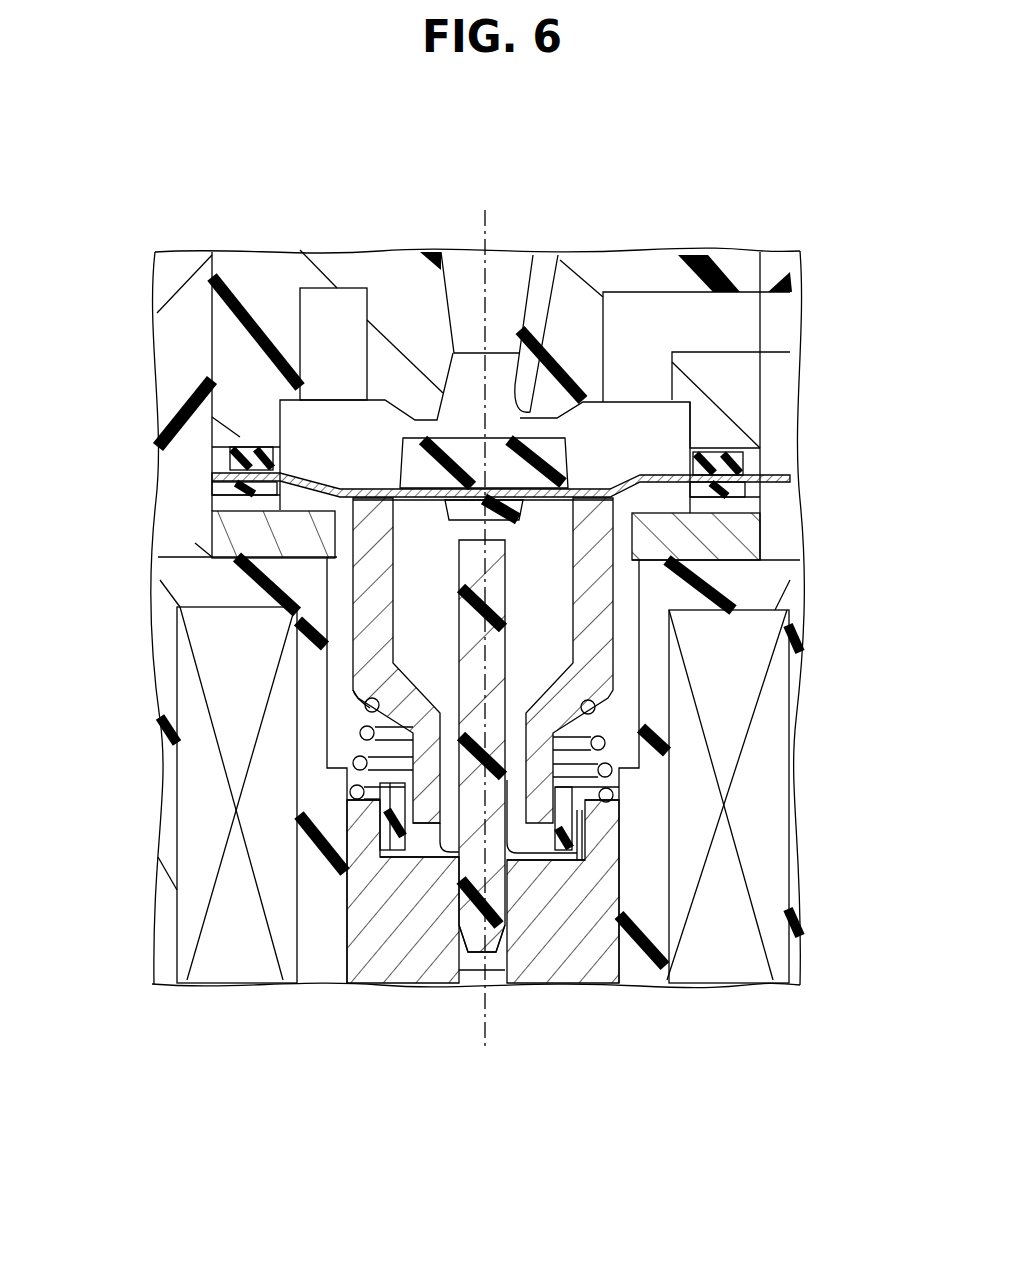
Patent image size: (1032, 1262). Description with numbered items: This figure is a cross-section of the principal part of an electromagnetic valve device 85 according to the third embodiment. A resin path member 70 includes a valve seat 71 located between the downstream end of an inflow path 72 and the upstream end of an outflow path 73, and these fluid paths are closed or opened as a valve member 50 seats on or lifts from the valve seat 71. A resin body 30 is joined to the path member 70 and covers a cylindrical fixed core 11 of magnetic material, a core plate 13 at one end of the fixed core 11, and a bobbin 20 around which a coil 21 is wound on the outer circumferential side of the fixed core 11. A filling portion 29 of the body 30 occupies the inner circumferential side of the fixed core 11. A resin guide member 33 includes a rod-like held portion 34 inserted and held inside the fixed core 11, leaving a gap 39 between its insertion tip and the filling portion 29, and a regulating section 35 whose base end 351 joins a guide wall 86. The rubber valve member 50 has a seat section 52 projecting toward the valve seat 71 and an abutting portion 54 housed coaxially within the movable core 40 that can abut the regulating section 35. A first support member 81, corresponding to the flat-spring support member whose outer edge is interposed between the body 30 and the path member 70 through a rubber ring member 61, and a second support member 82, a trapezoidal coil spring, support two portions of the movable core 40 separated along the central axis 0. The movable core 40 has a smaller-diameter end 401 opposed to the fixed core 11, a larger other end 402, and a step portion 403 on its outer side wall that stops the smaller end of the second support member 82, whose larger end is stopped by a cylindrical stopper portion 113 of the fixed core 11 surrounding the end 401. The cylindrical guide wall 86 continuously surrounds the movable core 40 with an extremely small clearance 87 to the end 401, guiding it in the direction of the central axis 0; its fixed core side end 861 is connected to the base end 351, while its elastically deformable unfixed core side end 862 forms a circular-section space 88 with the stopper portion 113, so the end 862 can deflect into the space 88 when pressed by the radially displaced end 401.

The central axis 0 is at (486, 230).
The fixed core 11 is at (353, 895).
The core plate 13 is at (728, 535).
The bobbin 20 is at (657, 930).
The coil 21 is at (765, 883).
The filling portion 29 is at (495, 888).
The body 30 is at (172, 320).
The guide member 33 is at (645, 762).
The held portion 34 is at (513, 845).
The regulating section 35 is at (498, 603).
The base end of regulating section 351 is at (548, 735).
The gap 39 is at (465, 960).
The movable core 40 is at (350, 606).
The fixed core side end of movable core 401 is at (432, 815).
The unfixed core side end of movable core 402 is at (370, 510).
The step portion 403 is at (363, 694).
The valve member 50 is at (230, 448).
The seat section 52 is at (557, 455).
The abutting portion 54 is at (717, 505).
The rubber ring member 61 is at (725, 457).
The path member 70 is at (652, 268).
The valve seat 71 is at (520, 395).
The inflow path 72 is at (728, 296).
The outflow path 73 is at (452, 268).
The first support member 81 is at (300, 495).
The second support member 82 is at (375, 765).
The electromagnetic valve device 85 is at (805, 245).
The guide wall 86 is at (605, 813).
The fixed core side end of guide wall 861 is at (405, 890).
The unfixed core side end of guide wall 862 is at (405, 803).
The clearance 87 is at (395, 848).
The space 88 is at (580, 815).
The stopper portion 113 is at (618, 822).